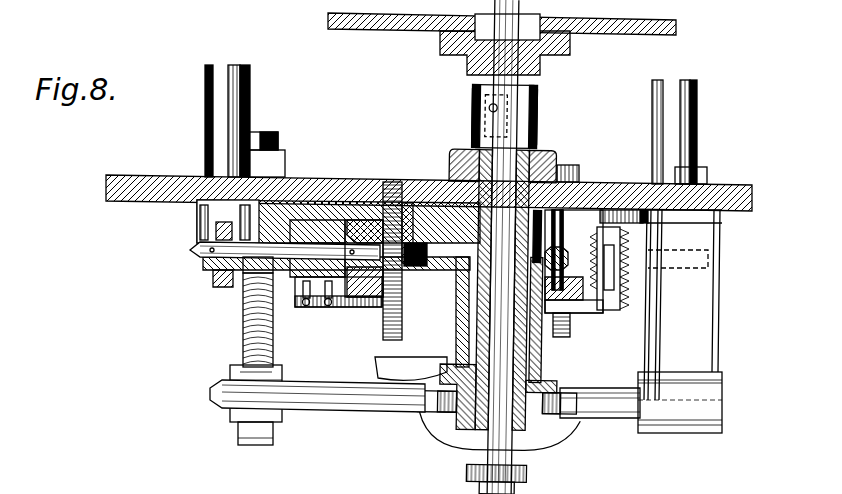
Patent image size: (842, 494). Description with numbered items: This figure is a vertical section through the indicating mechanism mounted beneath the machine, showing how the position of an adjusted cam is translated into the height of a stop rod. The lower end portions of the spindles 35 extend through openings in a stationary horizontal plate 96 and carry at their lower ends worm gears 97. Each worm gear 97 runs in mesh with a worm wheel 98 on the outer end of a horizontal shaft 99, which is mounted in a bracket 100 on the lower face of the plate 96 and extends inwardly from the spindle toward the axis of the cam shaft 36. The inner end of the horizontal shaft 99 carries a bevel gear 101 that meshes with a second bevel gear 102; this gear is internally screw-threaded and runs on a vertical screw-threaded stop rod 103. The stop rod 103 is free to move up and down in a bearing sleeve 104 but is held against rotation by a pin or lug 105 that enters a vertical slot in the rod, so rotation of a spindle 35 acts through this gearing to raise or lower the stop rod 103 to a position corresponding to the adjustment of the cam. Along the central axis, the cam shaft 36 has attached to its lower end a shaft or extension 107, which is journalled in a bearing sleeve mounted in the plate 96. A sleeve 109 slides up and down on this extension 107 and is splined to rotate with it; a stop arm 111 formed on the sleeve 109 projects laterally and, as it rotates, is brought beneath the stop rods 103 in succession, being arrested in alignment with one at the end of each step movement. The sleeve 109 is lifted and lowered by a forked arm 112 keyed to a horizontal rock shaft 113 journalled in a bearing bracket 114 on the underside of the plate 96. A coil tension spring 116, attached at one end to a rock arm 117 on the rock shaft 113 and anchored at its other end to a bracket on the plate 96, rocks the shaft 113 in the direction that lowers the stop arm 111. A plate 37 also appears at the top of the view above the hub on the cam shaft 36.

The spindle 35 is at (237, 108).
The cam shaft 36 is at (540, 58).
The top plate 37 is at (655, 36).
The stationary horizontal plate 96 is at (618, 192).
The worm gear 97 is at (193, 255).
The worm wheel 98 is at (220, 287).
The horizontal shaft 99 is at (283, 275).
The bracket 100 is at (340, 203).
The bevel gear 101 is at (352, 307).
The bevel gear 102 is at (440, 284).
The stop rod 103 is at (572, 168).
The bearing sleeve 104 is at (412, 219).
The pin or lug 105 is at (406, 240).
The shaft or extension 107 is at (474, 466).
The sleeve 109 is at (543, 360).
The stop arm 111 is at (372, 366).
The forked arm 112 is at (560, 448).
The rock shaft 113 is at (395, 408).
The bearing bracket 114 is at (652, 360).
The coil tension spring 116 is at (243, 346).
The rock arm 117 is at (236, 432).